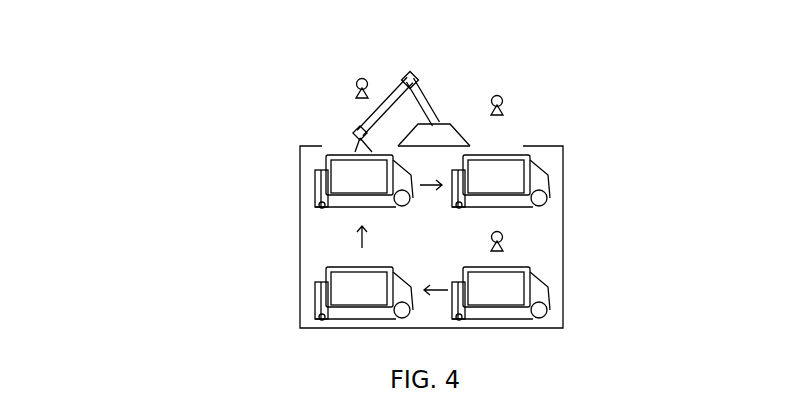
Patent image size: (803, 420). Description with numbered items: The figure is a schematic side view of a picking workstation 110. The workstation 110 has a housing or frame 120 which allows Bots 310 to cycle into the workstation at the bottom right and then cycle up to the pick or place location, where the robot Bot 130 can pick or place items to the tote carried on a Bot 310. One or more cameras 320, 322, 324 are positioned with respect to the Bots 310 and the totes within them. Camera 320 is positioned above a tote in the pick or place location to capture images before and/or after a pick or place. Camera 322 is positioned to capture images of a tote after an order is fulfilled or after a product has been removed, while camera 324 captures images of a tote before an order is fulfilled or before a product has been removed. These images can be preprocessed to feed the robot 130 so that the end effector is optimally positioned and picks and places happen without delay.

The picking workstation 110 is at (153, 124).
The housing or frame 120 is at (565, 327).
The Bot 130 is at (423, 123).
The Bots 310 is at (545, 289).
The camera 320 is at (356, 82).
The camera 322 is at (508, 95).
The camera 324 is at (502, 235).